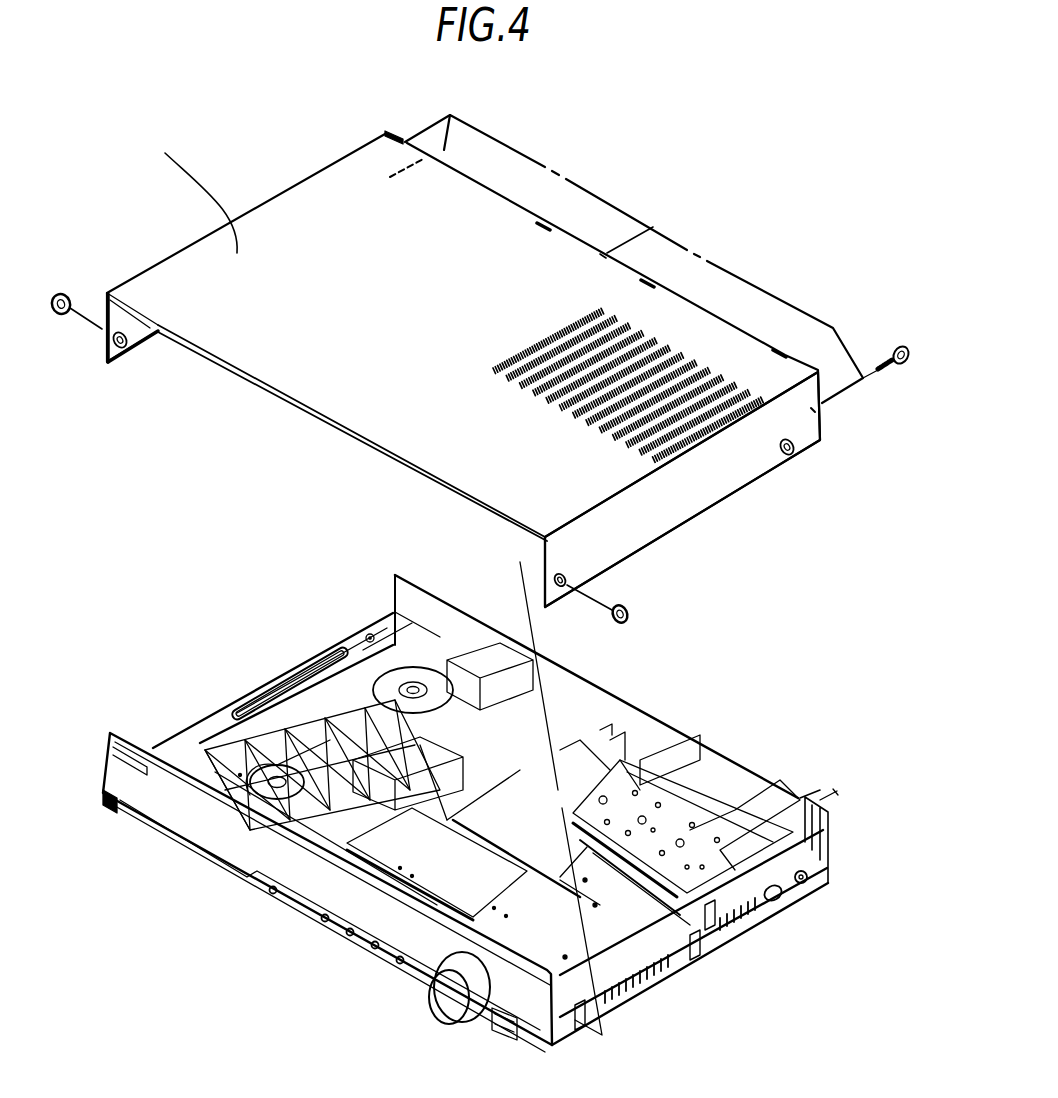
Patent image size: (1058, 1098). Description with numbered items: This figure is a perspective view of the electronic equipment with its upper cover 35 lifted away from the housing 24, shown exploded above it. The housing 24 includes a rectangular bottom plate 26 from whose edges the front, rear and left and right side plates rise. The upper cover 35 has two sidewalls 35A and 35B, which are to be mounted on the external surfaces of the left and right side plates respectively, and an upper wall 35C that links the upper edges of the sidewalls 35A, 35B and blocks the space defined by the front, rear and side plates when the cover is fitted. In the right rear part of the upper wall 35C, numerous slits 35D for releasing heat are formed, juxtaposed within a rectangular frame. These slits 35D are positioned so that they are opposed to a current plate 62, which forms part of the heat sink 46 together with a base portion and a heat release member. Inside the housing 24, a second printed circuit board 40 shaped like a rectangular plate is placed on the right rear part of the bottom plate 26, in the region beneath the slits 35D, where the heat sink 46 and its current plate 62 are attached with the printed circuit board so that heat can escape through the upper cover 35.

The upper cover 35 is at (328, 213).
The sidewall 35A is at (103, 333).
The sidewall 35B is at (657, 500).
The upper wall 35C is at (173, 226).
The slits 35D is at (657, 353).
The housing 24 is at (470, 807).
The bottom plate 26 is at (365, 683).
The second printed circuit board 40 is at (632, 900).
The heat sink 46 is at (637, 860).
The current plate 62 is at (617, 787).